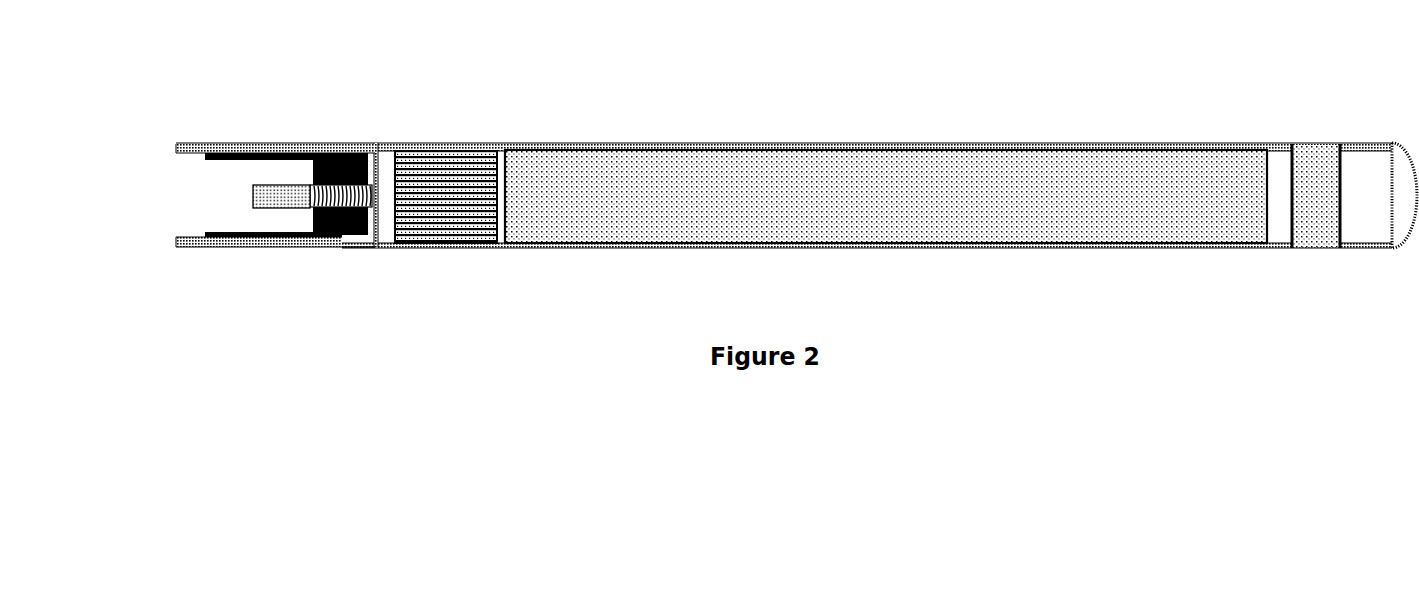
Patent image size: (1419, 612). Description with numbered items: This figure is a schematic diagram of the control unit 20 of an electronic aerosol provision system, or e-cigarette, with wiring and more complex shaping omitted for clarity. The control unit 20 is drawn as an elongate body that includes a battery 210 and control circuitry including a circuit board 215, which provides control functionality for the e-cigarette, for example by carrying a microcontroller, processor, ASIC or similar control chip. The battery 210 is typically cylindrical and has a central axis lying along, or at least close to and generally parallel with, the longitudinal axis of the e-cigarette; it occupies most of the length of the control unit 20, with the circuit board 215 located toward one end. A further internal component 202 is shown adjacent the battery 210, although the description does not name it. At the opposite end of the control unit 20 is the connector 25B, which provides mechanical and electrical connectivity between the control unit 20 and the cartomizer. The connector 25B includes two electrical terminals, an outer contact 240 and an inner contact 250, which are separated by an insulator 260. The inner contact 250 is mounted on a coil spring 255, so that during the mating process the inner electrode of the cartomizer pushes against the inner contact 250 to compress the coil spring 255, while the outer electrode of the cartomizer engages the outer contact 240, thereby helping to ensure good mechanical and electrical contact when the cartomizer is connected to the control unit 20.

The control unit 20 is at (796, 308).
The connector 25B is at (254, 101).
The control component 202 is at (491, 239).
The battery 210 is at (886, 163).
The circuit board 215 is at (1233, 142).
The outer contact 240 is at (231, 287).
The inner contact 250 is at (224, 281).
The coil spring 255 is at (266, 291).
The insulator 260 is at (390, 154).